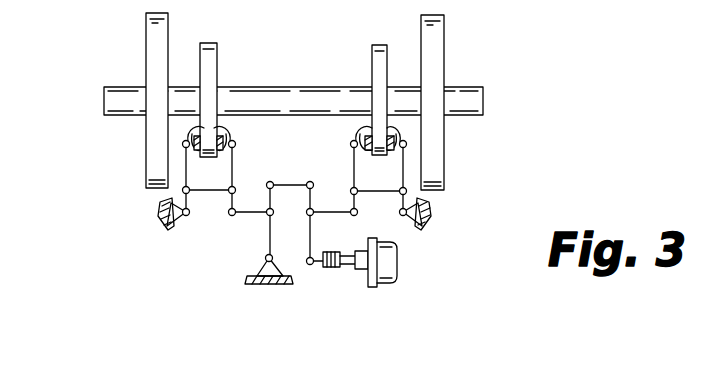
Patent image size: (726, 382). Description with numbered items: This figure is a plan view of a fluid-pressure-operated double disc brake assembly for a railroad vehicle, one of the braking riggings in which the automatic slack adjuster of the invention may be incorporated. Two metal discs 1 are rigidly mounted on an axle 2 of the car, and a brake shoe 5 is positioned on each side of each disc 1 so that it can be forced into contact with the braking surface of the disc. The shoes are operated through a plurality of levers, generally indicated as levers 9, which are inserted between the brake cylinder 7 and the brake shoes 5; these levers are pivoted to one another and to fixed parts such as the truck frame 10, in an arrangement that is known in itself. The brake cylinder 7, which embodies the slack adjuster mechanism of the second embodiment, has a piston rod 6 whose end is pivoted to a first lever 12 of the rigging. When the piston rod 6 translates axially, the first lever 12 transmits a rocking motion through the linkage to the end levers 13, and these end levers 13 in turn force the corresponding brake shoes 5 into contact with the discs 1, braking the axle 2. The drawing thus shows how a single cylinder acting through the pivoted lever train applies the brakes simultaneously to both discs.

The metal disc 1 is at (217, 60).
The axle 2 is at (303, 94).
The brake shoe 5 is at (220, 134).
The piston rod 6 is at (314, 259).
The brake cylinder 7 is at (400, 273).
The levers 9 is at (303, 175).
The truck frame 10 is at (178, 216).
The first lever 12 is at (310, 237).
The end levers 13 is at (229, 176).